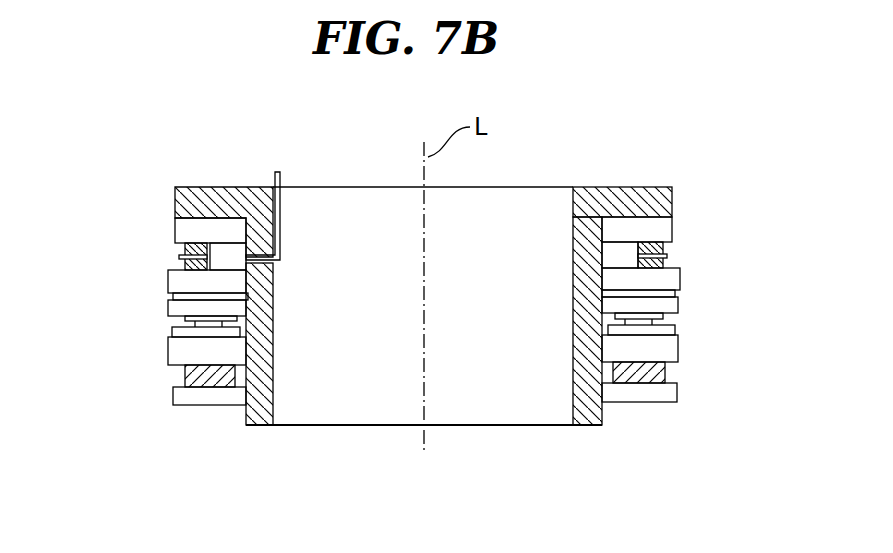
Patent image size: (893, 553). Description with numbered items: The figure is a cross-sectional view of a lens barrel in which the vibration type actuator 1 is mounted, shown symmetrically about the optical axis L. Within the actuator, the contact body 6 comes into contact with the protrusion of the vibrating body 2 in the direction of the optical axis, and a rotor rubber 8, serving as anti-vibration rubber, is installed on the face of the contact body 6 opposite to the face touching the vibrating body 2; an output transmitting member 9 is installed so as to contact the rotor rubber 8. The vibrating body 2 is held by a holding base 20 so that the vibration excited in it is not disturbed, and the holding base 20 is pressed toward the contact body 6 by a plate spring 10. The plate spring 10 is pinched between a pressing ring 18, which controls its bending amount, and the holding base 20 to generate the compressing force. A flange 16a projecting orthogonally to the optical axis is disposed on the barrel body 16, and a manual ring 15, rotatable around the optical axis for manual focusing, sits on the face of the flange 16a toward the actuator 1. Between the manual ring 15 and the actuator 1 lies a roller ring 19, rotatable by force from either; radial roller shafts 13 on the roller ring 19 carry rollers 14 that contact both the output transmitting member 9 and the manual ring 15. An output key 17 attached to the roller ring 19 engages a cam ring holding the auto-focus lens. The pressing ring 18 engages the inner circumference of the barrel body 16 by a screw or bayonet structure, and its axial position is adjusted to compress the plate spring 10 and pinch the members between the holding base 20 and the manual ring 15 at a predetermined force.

The vibration type actuator 1 is at (156, 314).
The vibrating body 2 is at (170, 332).
The contact body 6 is at (178, 308).
The rotor rubber 8 is at (175, 298).
The output transmitting member 9 is at (178, 278).
The plate spring 10 is at (665, 378).
The roller shaft 13 is at (667, 257).
The roller 14 is at (664, 249).
The manual ring 15 is at (665, 232).
The barrel body 16 is at (590, 426).
The flange 16a is at (200, 195).
The output key 17 is at (276, 180).
The pressing ring 18 is at (668, 393).
The roller ring 19 is at (625, 262).
The holding base 20 is at (172, 356).